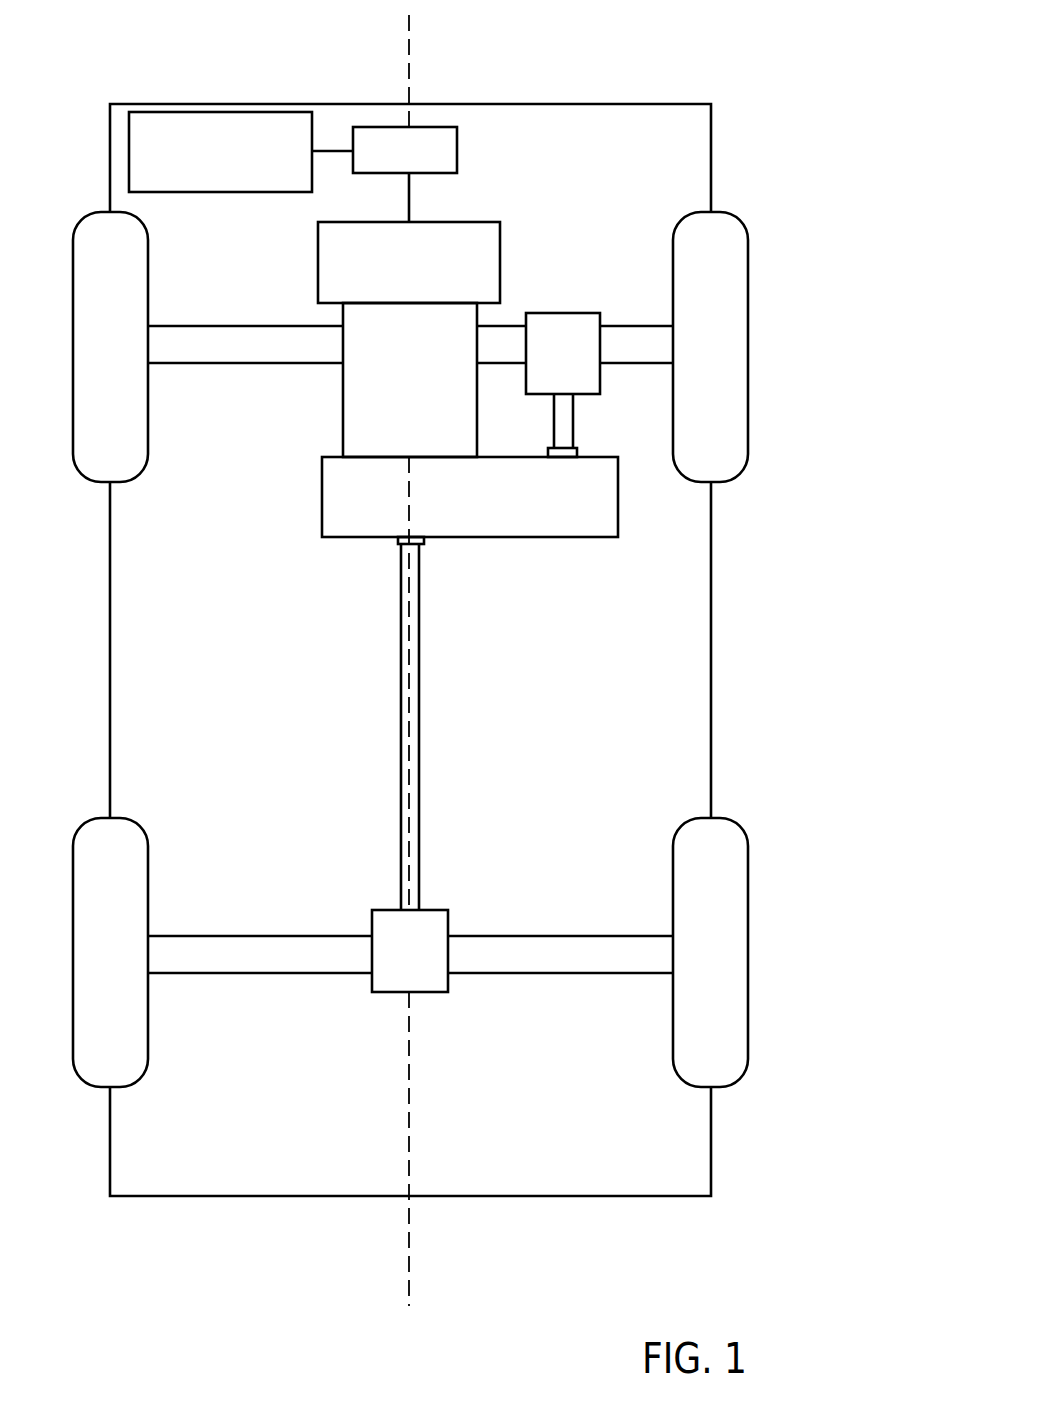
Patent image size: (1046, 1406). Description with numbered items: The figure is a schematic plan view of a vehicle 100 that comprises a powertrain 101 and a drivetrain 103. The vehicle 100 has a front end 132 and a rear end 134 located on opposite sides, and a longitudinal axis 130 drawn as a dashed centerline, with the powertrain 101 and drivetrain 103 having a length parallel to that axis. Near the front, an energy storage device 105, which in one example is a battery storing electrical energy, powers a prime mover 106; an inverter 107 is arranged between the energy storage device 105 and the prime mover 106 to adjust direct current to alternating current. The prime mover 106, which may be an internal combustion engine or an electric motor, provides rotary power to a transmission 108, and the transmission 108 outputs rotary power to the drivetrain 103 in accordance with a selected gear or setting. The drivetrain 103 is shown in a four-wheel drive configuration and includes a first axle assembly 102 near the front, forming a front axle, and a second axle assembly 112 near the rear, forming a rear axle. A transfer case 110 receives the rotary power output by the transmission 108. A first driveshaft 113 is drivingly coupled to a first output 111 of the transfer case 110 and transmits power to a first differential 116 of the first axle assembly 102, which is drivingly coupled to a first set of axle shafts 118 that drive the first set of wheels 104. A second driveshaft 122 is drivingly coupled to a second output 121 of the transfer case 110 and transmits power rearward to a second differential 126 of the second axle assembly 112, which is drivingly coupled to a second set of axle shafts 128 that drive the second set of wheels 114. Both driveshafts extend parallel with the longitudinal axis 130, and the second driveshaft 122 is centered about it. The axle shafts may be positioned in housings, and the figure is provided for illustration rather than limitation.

The vehicle 100 is at (787, 70).
The powertrain 101 is at (523, 165).
The first axle assembly 102 is at (552, 280).
The drivetrain 103 is at (297, 438).
The first set of wheels 104 is at (90, 212).
The energy storage device 105 is at (238, 164).
The prime mover 106 is at (427, 274).
The inverter 107 is at (423, 162).
The transmission 108 is at (428, 390).
The transfer case 110 is at (487, 510).
The first output 111 is at (578, 455).
The second axle assembly 112 is at (485, 880).
The first driveshaft 113 is at (574, 430).
The second set of wheels 114 is at (85, 818).
The first differential 116 is at (581, 364).
The first set of axle shafts 118 is at (218, 326).
The second output 121 is at (424, 541).
The second driveshaft 122 is at (420, 760).
The second differential 126 is at (428, 960).
The second set of axle shafts 128 is at (595, 936).
The longitudinal axis 130 is at (412, 80).
The front end 132 is at (612, 55).
The rear end 134 is at (512, 1237).